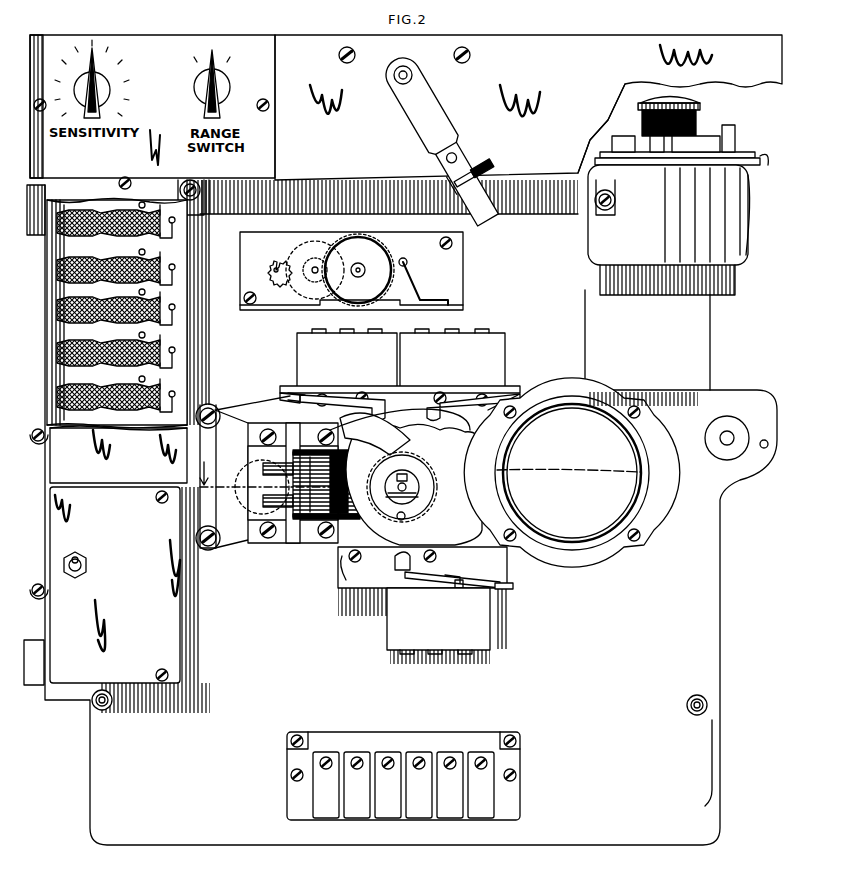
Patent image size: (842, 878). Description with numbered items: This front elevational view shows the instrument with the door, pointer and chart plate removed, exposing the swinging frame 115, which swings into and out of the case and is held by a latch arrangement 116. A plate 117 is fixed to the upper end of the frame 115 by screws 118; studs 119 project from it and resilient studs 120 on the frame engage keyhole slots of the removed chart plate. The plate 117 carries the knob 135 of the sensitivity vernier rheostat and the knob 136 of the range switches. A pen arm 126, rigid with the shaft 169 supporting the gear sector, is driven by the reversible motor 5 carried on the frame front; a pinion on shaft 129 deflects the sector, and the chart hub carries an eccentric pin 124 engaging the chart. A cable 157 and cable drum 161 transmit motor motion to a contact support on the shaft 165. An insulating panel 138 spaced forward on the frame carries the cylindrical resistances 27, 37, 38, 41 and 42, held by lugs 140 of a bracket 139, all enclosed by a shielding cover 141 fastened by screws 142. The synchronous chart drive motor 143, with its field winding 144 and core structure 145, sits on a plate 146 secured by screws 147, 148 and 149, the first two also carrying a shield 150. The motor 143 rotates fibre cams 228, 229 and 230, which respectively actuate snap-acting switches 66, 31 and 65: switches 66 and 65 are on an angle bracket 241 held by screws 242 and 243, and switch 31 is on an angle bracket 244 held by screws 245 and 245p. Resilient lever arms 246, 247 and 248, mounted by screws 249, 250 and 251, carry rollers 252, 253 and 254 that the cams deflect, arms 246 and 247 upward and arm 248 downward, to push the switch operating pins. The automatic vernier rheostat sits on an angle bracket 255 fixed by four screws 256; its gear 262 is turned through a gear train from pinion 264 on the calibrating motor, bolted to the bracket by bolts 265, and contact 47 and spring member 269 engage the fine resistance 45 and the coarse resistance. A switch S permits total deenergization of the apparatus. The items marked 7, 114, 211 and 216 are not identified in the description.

The reversible motor 5 is at (620, 503).
The section line 7 is at (437, 462).
The resistance 27 is at (105, 210).
The switch 31 is at (392, 638).
The resistance 37 is at (128, 262).
The resistance 38 is at (126, 300).
The resistance 41 is at (122, 345).
The resistance 42 is at (122, 388).
The fine or vernier resistance 45 is at (362, 236).
The contact 47 is at (404, 257).
The switch 65 is at (500, 345).
The switch 66 is at (298, 345).
The mounting bracket 114 is at (36, 232).
The frame 115 is at (708, 609).
The latch arrangement 116 is at (733, 425).
The plate 117 is at (585, 45).
The screws 118 is at (345, 47).
The studs 119 is at (614, 202).
The resilient studs 120 is at (104, 712).
The eccentrically located pin 124 is at (406, 516).
The pen arm 126 is at (448, 133).
The shaft 129 is at (398, 480).
The knob 135 is at (110, 75).
The knob 136 is at (196, 86).
The panel 138 is at (72, 332).
The bracket 139 is at (55, 290).
The lugs 140 is at (55, 310).
The cover 141 is at (62, 452).
The screws 142 is at (118, 175).
The chart drive motor 143 is at (240, 436).
The field winding 144 is at (312, 518).
The core structure 145 is at (300, 512).
The plate 146 is at (275, 388).
The screw 147 is at (212, 400).
The screw 148 is at (212, 550).
The screw 149 is at (478, 470).
The shield 150 is at (210, 452).
The cable 157 is at (620, 125).
The cable drum 161 is at (698, 118).
The shaft 165 is at (710, 150).
The shaft 169 is at (403, 72).
The contact 211 is at (410, 478).
The contact spring 216 is at (406, 483).
The fibre cam 228 is at (355, 420).
The fibre cam 229 is at (462, 530).
The fibre cam 230 is at (395, 440).
The angle bracket 241 is at (485, 412).
The screw 242 is at (368, 390).
The screw 243 is at (440, 390).
The angle bracket 244 is at (348, 588).
The screw 245 is at (348, 572).
The screw 245p is at (437, 560).
The resilient lever arm 246 is at (335, 388).
The resilient lever arm 247 is at (483, 390).
The resilient lever arm 248 is at (432, 580).
The screw 249 is at (282, 396).
The screw 250 is at (518, 388).
The screw 251 is at (508, 585).
The roller 252 is at (382, 417).
The roller 253 is at (427, 417).
The roller 254 is at (400, 562).
The angle bracket 255 is at (415, 247).
The screws 256 is at (453, 243).
The gear 262 is at (345, 232).
The pinion 264 is at (258, 286).
The bolts 265 is at (283, 250).
The resilient spring member 269 is at (415, 278).
The switch S is at (84, 555).